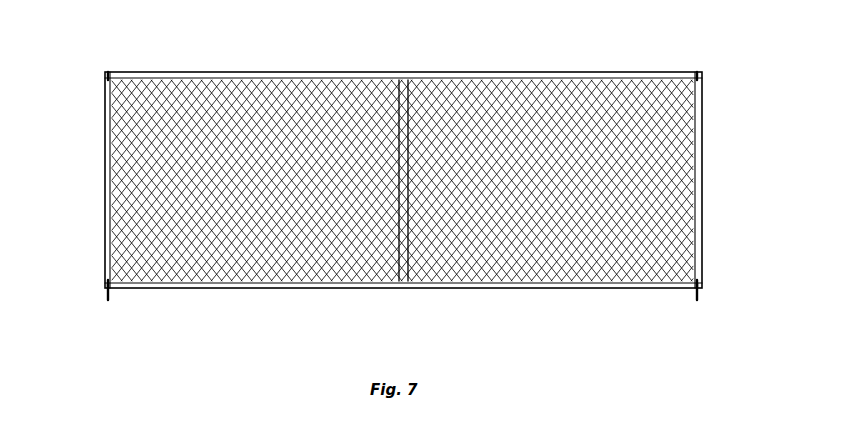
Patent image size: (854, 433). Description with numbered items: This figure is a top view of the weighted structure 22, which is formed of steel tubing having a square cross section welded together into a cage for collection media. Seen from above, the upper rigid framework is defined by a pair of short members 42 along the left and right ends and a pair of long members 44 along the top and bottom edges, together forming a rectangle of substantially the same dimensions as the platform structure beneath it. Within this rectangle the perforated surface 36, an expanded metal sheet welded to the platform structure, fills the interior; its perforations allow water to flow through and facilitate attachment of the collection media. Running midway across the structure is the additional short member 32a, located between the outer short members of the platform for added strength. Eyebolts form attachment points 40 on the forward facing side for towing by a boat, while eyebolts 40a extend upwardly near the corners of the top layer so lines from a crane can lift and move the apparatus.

The weighted structure 22 is at (471, 58).
The short member 32a is at (397, 108).
The perforated surface 36 is at (135, 133).
The attachment points 40 is at (107, 297).
The eyebolts 40a is at (106, 76).
The short members 42 is at (107, 178).
The long members 44 is at (582, 77).